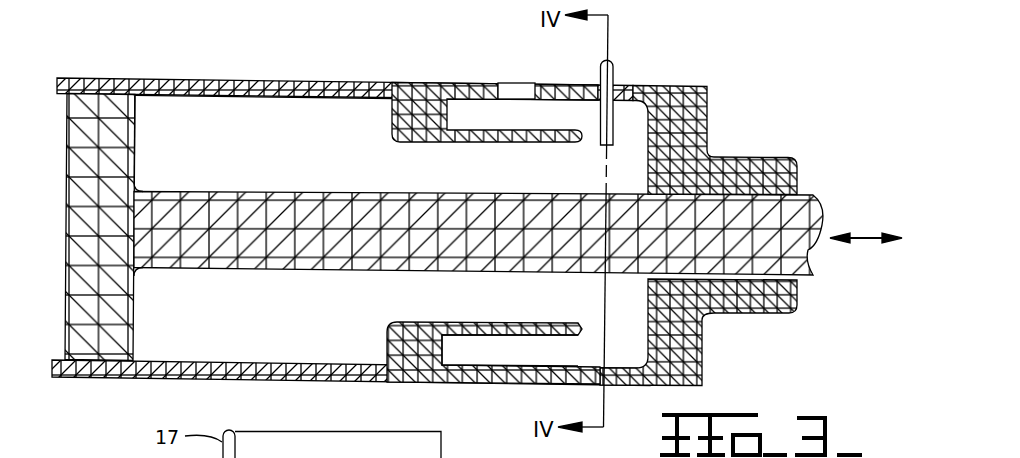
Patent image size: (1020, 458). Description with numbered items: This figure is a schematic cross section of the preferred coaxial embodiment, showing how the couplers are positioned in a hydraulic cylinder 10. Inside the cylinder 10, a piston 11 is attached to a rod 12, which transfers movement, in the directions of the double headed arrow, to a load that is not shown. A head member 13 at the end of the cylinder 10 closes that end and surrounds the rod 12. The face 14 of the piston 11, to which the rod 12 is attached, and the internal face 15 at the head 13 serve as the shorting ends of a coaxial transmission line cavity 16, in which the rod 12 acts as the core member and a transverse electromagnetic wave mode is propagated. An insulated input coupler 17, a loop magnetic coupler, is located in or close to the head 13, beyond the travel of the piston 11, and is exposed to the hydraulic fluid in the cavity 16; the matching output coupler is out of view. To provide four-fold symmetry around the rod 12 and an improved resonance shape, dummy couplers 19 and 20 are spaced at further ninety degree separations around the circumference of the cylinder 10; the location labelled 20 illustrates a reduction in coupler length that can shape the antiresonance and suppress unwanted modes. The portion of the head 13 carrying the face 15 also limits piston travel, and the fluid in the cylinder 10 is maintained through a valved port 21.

The cylinder 10 is at (203, 78).
The piston 11 is at (117, 322).
The rod 12 is at (812, 257).
The head member 13 is at (755, 157).
The face of the piston 14 is at (135, 160).
The internal face of the head 15 is at (388, 110).
The coaxial transmission line cavity 16 is at (300, 145).
The input coupler 17 is at (615, 72).
The dummy coupler 19 is at (485, 335).
The dummy coupler 20 is at (575, 340).
The valved port 21 is at (518, 83).